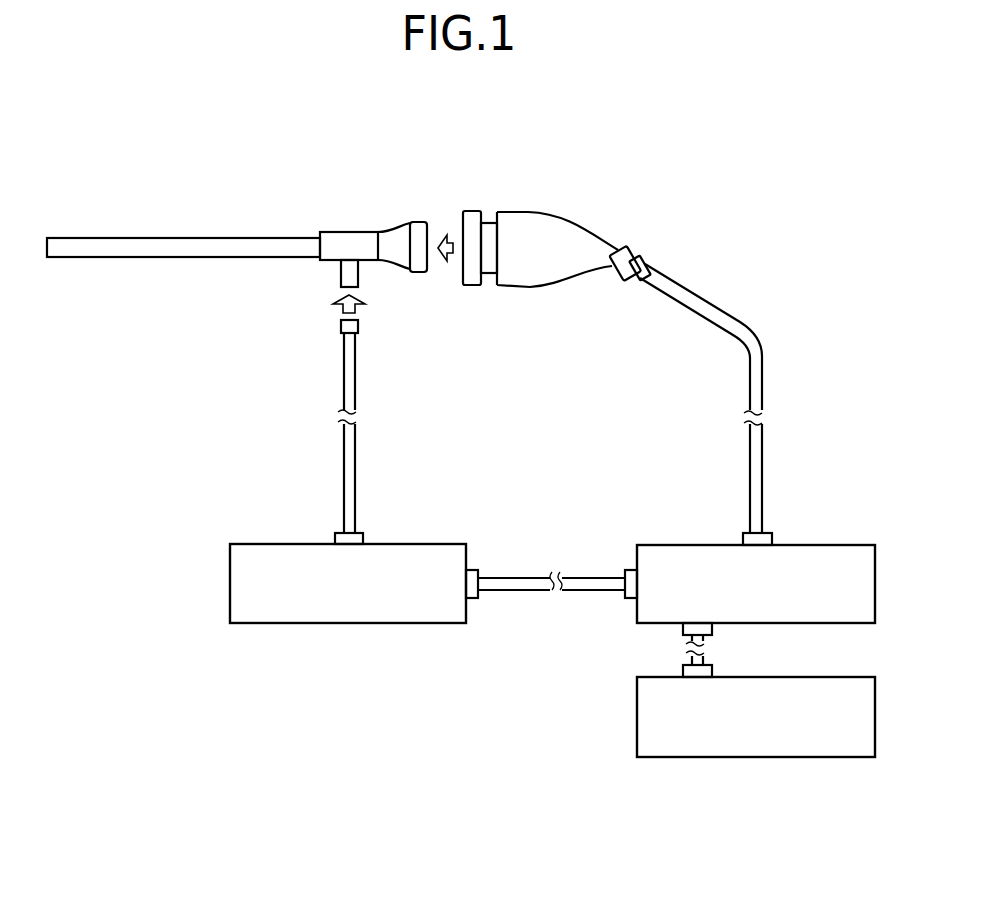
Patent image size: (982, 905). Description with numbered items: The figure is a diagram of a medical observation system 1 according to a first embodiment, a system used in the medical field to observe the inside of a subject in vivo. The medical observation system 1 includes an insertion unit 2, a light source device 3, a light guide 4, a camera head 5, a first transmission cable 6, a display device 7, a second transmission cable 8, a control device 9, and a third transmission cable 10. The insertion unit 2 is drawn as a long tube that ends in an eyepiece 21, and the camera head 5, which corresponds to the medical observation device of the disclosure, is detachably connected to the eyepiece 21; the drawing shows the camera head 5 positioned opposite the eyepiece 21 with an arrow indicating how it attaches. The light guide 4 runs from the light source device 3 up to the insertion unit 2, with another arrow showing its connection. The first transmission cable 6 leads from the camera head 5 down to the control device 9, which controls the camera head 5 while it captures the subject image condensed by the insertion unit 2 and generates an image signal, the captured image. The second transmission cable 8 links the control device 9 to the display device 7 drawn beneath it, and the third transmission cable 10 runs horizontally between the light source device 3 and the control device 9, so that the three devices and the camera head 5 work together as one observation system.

The medical observation system 1 is at (712, 149).
The insertion unit 2 is at (266, 246).
The eyepiece 21 is at (418, 232).
The light source device 3 is at (404, 545).
The light guide 4 is at (344, 480).
The camera head 5 is at (518, 228).
The first transmission cable 6 is at (762, 373).
The display device 7 is at (815, 677).
The second transmission cable 8 is at (690, 662).
The control device 9 is at (817, 545).
The third transmission cable 10 is at (598, 575).